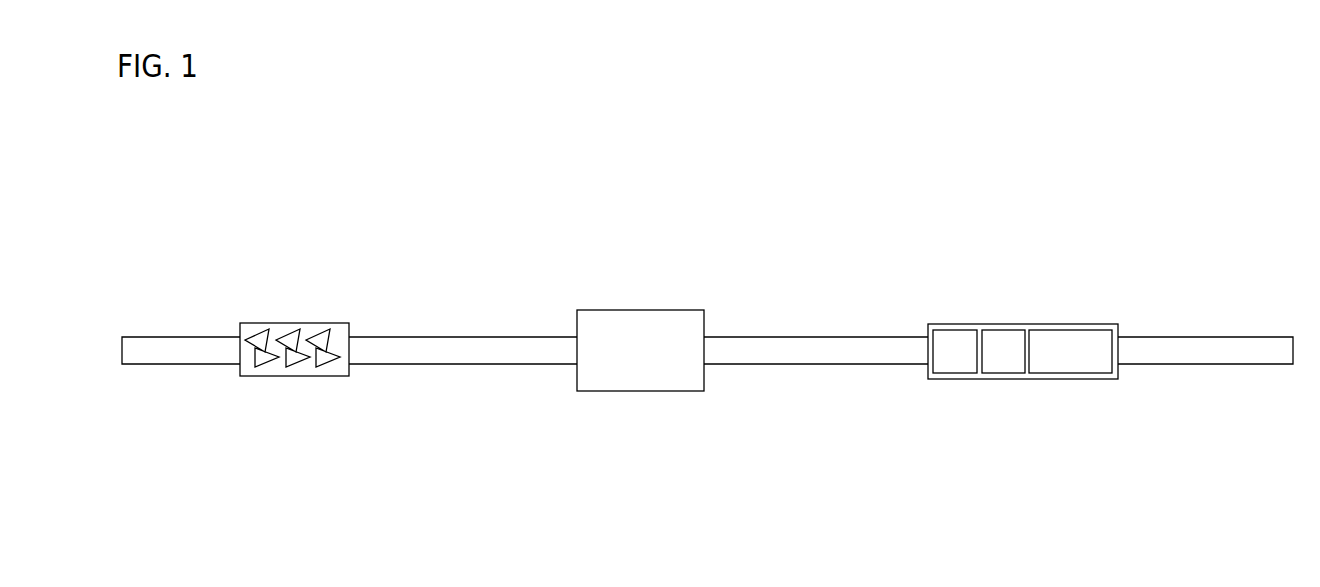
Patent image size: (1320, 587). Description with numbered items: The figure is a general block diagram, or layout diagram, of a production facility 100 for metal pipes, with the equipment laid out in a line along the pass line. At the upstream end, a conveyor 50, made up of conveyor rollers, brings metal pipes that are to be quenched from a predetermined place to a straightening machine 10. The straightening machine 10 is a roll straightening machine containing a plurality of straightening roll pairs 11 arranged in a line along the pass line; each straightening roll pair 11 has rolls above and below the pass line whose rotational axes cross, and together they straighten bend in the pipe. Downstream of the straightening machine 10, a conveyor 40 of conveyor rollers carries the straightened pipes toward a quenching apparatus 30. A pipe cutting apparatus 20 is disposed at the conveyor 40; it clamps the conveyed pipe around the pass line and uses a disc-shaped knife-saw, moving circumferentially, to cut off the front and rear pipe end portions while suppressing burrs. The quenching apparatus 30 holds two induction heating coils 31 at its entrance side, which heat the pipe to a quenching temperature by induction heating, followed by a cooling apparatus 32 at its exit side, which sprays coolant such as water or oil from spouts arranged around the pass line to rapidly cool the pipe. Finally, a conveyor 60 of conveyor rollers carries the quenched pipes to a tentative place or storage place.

The production facility 100 is at (845, 190).
The straightening machine 10 is at (292, 322).
The straightening roll pairs 11 is at (268, 364).
The pipe cutting apparatus 20 is at (640, 310).
The quenching apparatus 30 is at (1020, 324).
The induction heating coil 31 is at (952, 362).
The cooling apparatus 32 is at (1070, 363).
The conveyor 40 is at (468, 337).
The conveyor 50 is at (170, 342).
The conveyor 60 is at (1207, 345).